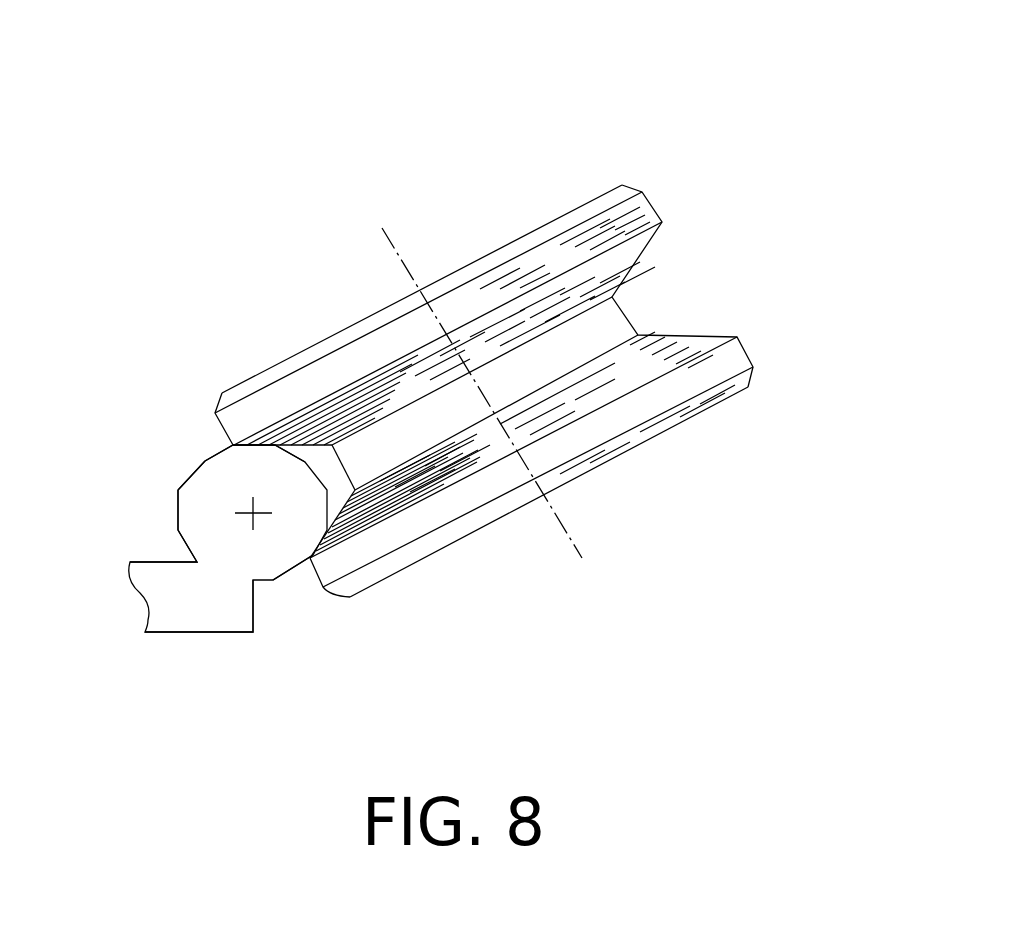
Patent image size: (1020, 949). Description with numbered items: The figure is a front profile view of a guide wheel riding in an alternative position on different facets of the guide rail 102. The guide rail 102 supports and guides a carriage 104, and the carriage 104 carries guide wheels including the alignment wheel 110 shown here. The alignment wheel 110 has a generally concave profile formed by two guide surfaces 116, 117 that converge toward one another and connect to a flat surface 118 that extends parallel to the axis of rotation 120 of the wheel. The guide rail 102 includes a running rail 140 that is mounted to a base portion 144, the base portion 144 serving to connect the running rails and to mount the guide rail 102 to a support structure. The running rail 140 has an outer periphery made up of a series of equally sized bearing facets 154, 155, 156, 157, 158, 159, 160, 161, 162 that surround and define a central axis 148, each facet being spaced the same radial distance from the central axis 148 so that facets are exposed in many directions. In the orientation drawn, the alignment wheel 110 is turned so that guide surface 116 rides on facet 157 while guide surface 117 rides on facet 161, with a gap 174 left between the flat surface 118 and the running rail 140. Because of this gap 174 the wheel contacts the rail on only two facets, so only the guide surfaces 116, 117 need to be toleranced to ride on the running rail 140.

The guide rail 102 is at (192, 664).
The carriage 104 is at (678, 136).
The alignment wheel 110 is at (601, 223).
The guide surface 116 is at (650, 245).
The guide surface 117 is at (713, 335).
The flat surface 118 is at (627, 320).
The axis of rotation 120 is at (410, 268).
The running rail 140 is at (215, 527).
The base portion 144 is at (170, 617).
The central axis 148 is at (247, 523).
The facet 154 is at (176, 504).
The facet 155 is at (190, 470).
The facet 156 is at (214, 443).
The facet 157 is at (254, 443).
The facet 158 is at (296, 443).
The facet 159 is at (322, 484).
The facet 160 is at (329, 508).
The facet 161 is at (350, 598).
The facet 162 is at (308, 562).
The gap 174 is at (330, 445).